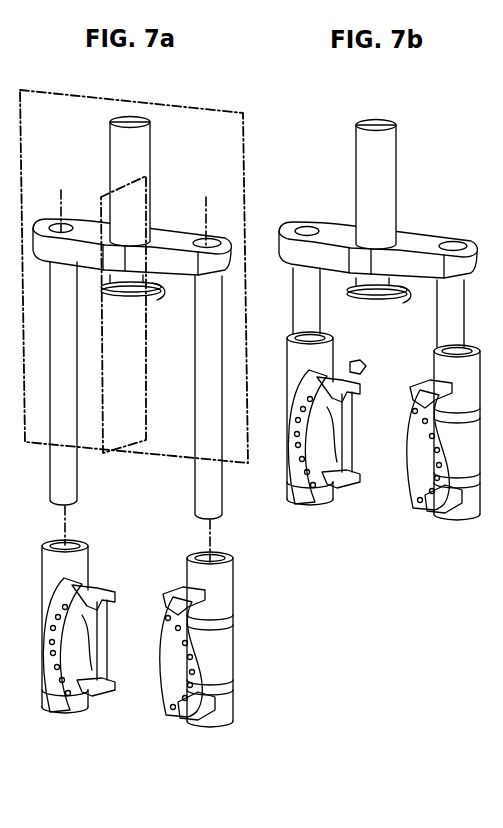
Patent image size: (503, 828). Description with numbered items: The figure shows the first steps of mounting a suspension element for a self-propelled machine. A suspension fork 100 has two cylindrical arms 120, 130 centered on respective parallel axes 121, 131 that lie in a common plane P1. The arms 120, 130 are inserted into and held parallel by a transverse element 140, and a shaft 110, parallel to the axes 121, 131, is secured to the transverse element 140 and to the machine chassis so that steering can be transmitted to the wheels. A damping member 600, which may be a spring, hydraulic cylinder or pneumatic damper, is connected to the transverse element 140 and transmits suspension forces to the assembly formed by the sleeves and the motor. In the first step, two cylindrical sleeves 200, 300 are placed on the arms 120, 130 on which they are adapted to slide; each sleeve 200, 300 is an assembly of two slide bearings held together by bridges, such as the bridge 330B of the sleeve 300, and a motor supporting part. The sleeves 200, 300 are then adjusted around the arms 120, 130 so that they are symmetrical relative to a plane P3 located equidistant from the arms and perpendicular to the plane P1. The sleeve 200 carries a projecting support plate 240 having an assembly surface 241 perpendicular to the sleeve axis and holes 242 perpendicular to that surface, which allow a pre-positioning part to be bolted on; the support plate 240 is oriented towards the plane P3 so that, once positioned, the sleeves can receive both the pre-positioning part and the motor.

In FIG. 7a, the suspension fork 100 is at (104, 150).
In FIG. 7a, the shaft 110 is at (143, 152).
In FIG. 7a, the cylindrical arm 120 is at (70, 488).
In FIG. 7b, the cylindrical arm 120 is at (300, 302).
In FIG. 7a, the axis 121 is at (67, 220).
In FIG. 7a, the cylindrical arm 130 is at (217, 501).
In FIG. 7b, the cylindrical arm 130 is at (447, 312).
In FIG. 7a, the axis 131 is at (213, 232).
In FIG. 7a, the transverse element 140 is at (167, 233).
In FIG. 7a, the damping member 600 is at (150, 297).
In FIG. 7a, the cylindrical sleeve 200 is at (113, 672).
In FIG. 7a, the cylindrical sleeve 300 is at (250, 695).
In FIG. 7b, the support plate 240 is at (350, 397).
In FIG. 7b, the assembly surface 241 is at (347, 355).
In FIG. 7b, the hole 242 is at (362, 368).
In FIG. 7b, the bridge 330B is at (430, 503).
In FIG. 7a, the plane P1 is at (192, 103).
In FIG. 7a, the plane P3 is at (103, 458).